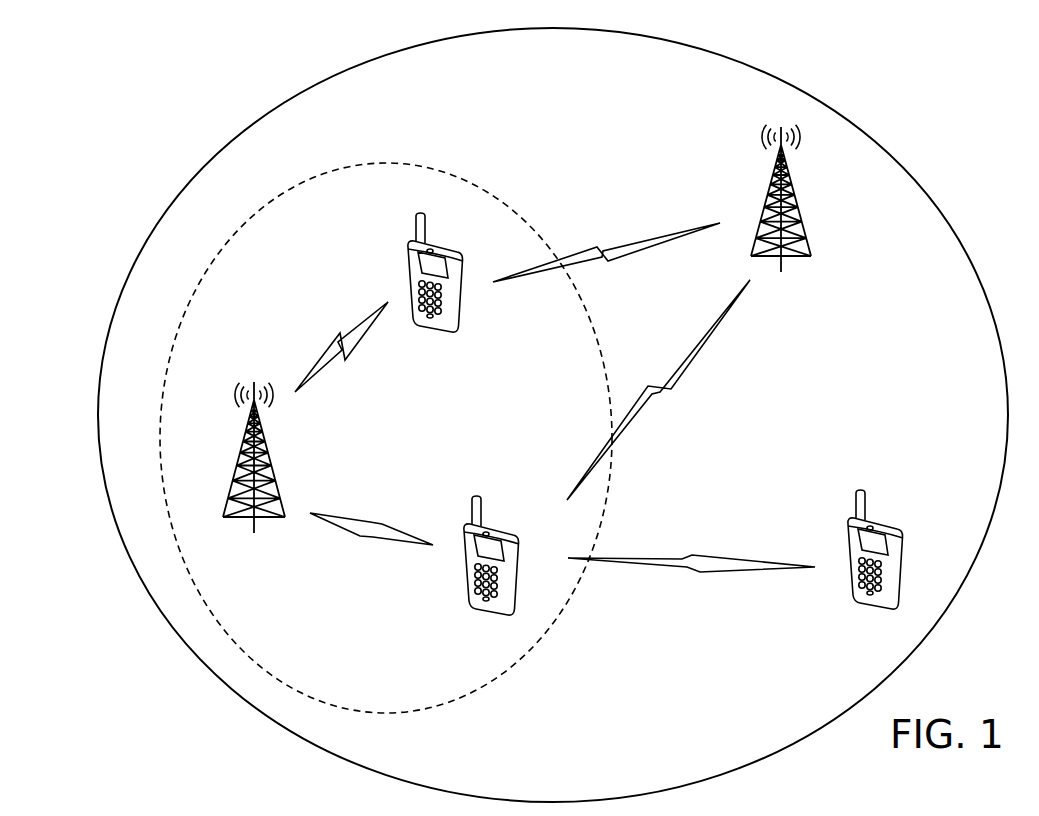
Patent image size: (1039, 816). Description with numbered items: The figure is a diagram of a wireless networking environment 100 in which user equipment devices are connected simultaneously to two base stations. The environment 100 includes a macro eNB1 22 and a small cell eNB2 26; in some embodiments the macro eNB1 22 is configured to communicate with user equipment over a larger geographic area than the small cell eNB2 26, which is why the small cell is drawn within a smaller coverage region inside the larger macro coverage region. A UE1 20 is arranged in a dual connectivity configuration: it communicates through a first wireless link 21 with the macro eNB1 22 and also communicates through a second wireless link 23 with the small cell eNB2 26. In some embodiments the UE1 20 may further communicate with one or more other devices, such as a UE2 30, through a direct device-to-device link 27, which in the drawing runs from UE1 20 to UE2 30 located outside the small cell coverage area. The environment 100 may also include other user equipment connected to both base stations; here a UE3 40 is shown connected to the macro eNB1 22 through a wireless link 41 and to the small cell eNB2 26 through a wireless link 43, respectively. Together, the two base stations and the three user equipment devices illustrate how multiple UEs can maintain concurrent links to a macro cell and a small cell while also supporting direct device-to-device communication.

The wireless networking environment 100 is at (262, 68).
The macro eNB1 22 is at (793, 205).
The small cell eNB2 26 is at (248, 442).
The UE1 20 is at (505, 533).
The UE2 30 is at (888, 528).
The UE3 40 is at (450, 250).
The first wireless link 21 is at (654, 383).
The second wireless link 23 is at (372, 523).
The direct device-to-device link 27 is at (687, 556).
The wireless link 41 is at (606, 250).
The wireless link 43 is at (340, 341).